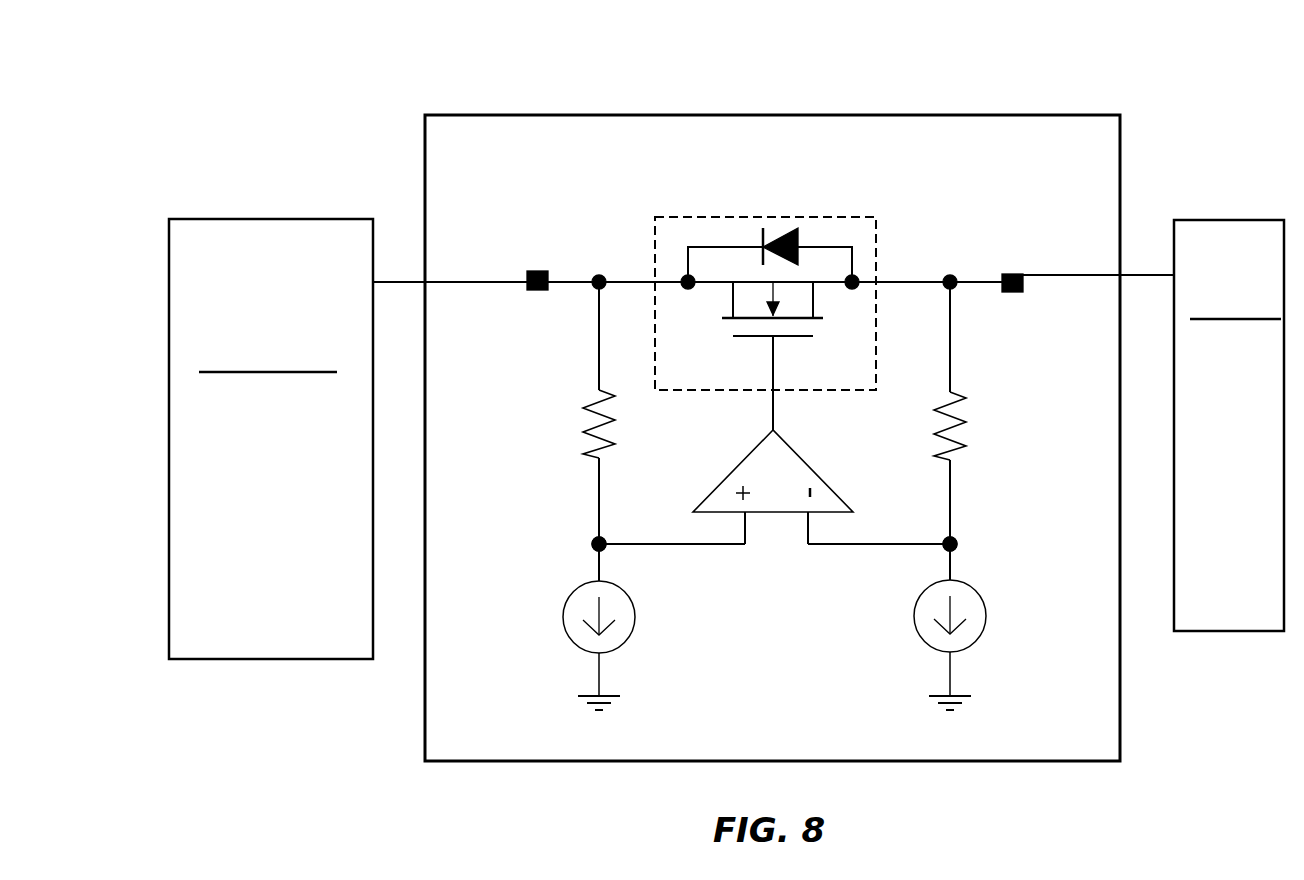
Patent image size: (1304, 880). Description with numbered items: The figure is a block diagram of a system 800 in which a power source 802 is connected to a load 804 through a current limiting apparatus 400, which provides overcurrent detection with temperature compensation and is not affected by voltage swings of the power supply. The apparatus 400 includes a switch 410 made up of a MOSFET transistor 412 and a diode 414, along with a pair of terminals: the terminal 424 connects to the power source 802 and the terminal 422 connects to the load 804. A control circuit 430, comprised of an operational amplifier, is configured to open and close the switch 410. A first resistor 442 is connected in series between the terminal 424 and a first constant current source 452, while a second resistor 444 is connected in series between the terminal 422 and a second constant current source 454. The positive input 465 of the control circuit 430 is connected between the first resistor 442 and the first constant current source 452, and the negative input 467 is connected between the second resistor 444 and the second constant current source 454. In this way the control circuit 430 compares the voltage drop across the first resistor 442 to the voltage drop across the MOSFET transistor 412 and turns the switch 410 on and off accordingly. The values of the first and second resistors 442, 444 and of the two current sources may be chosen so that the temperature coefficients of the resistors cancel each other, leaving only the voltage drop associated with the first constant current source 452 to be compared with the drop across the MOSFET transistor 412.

The system 800 is at (728, 61).
The power source 802 is at (236, 578).
The load 804 is at (1274, 566).
The current limiting apparatus 400 is at (743, 663).
The switch 410 is at (733, 217).
The MOSFET transistor 412 is at (782, 337).
The diode 414 is at (783, 232).
The terminal 422 is at (1012, 273).
The terminal 424 is at (517, 268).
The control circuit 430 is at (817, 475).
The first resistor 442 is at (566, 420).
The second resistor 444 is at (968, 390).
The first constant current source 452 is at (566, 580).
The second constant current source 454 is at (976, 593).
The positive input 465 is at (606, 546).
The negative input 467 is at (943, 547).